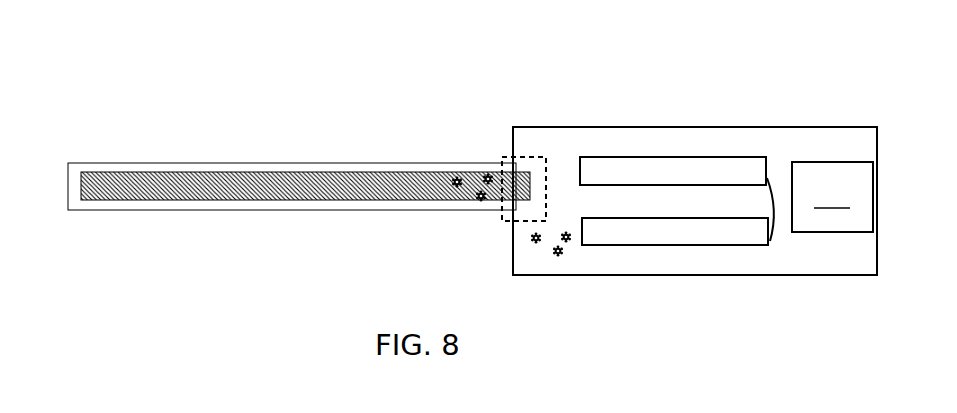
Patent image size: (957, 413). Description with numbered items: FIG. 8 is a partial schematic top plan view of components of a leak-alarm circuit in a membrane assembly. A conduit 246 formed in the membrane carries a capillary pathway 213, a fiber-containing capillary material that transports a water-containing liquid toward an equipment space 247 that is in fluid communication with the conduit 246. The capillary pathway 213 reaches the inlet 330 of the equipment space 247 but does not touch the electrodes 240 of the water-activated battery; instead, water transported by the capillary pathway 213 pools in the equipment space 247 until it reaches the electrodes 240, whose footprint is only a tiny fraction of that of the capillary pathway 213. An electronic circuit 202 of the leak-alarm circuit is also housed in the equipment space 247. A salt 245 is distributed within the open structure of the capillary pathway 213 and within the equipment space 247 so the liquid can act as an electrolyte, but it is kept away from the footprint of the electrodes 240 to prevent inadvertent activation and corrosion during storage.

The electronic circuit 202 is at (832, 197).
The capillary pathway 213 is at (229, 191).
The electrodes 240 is at (661, 154).
The salt 245 is at (476, 198).
The conduit 246 is at (148, 212).
The equipment space 247 is at (738, 125).
The inlet 330 is at (506, 224).